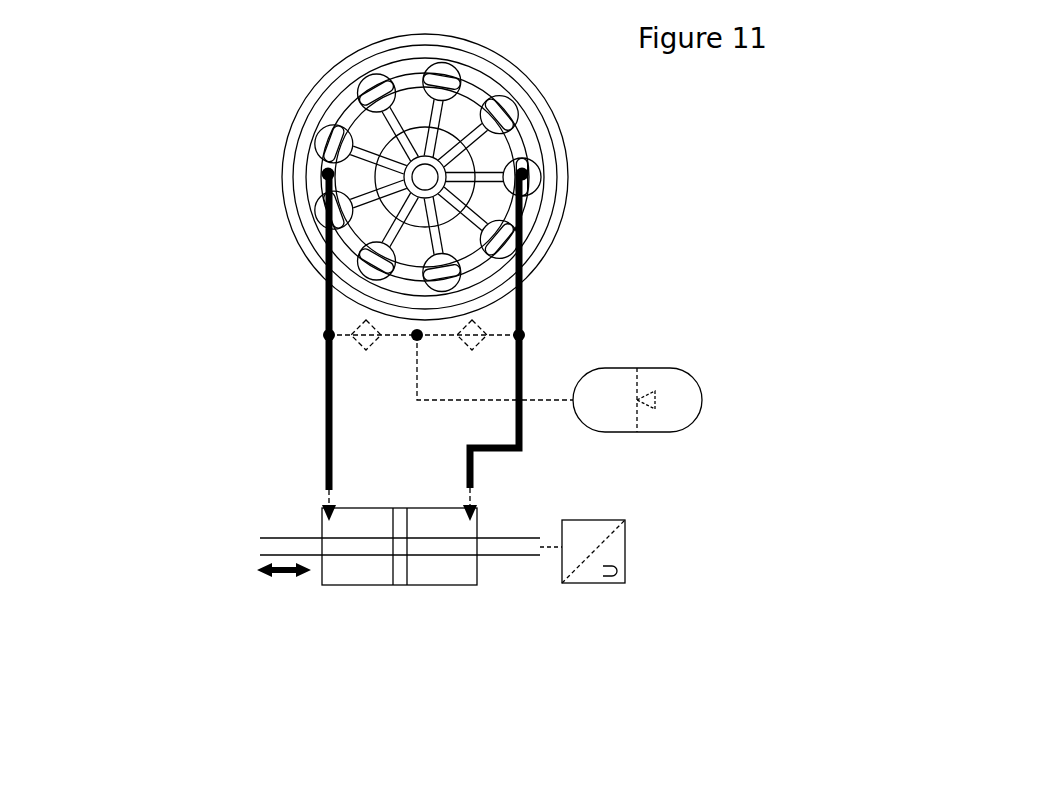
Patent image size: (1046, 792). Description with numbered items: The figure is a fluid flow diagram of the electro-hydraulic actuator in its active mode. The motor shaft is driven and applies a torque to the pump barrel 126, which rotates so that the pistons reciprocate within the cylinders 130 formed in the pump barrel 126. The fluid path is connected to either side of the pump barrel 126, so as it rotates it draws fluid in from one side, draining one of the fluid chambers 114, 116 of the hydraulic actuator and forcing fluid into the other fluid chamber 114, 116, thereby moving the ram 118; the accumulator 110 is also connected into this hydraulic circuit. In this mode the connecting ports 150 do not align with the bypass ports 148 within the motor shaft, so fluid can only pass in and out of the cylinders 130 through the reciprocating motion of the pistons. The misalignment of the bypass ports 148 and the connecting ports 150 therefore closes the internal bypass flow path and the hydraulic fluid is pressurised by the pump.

The accumulator 110 is at (623, 413).
The fluid chamber 114 is at (355, 570).
The fluid chamber 116 is at (437, 570).
The ram 118 is at (502, 538).
The pump barrel 126 is at (305, 188).
The cylinder 130 is at (325, 142).
The bypass port 148 is at (458, 192).
The connecting port 150 is at (395, 230).